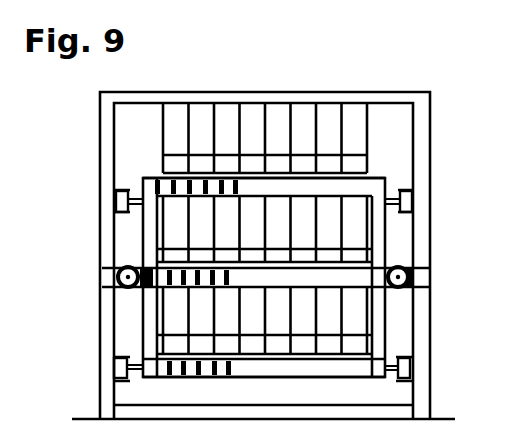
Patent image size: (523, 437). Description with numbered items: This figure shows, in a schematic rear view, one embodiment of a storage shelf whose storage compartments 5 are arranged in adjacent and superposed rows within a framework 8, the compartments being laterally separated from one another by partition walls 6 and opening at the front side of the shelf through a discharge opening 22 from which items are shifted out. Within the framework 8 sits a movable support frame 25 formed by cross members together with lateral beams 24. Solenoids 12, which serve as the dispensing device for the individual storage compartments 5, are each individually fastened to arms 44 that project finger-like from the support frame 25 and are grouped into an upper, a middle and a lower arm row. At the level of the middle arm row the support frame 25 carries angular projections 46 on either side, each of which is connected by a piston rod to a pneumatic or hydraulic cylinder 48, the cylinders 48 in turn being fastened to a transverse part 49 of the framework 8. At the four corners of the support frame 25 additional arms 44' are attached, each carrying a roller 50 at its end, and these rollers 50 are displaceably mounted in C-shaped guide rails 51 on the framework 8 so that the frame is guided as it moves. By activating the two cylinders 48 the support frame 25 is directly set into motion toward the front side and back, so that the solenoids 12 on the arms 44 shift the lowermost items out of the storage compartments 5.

The storage compartment 5 is at (303, 118).
The partition wall 6 is at (365, 120).
The framework 8 is at (266, 93).
The solenoid 12 is at (200, 185).
The discharge opening 22 is at (227, 160).
The lateral beam 24 is at (377, 236).
The support frame 25 is at (138, 244).
The arm 44 is at (235, 234).
The additional arm 44' is at (314, 224).
The angular projection 46 is at (113, 270).
The cylinder 48 is at (127, 267).
The transverse part 49 is at (100, 282).
The roller 50 is at (412, 197).
The C-shaped guide rail 51 is at (405, 189).